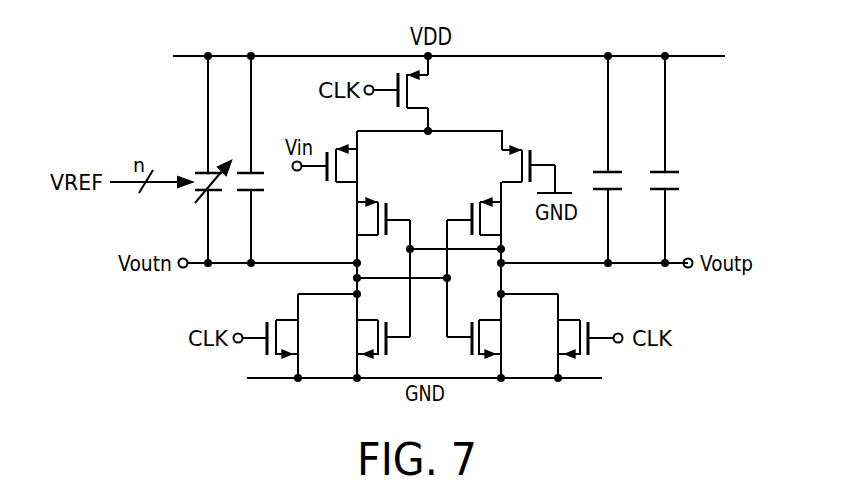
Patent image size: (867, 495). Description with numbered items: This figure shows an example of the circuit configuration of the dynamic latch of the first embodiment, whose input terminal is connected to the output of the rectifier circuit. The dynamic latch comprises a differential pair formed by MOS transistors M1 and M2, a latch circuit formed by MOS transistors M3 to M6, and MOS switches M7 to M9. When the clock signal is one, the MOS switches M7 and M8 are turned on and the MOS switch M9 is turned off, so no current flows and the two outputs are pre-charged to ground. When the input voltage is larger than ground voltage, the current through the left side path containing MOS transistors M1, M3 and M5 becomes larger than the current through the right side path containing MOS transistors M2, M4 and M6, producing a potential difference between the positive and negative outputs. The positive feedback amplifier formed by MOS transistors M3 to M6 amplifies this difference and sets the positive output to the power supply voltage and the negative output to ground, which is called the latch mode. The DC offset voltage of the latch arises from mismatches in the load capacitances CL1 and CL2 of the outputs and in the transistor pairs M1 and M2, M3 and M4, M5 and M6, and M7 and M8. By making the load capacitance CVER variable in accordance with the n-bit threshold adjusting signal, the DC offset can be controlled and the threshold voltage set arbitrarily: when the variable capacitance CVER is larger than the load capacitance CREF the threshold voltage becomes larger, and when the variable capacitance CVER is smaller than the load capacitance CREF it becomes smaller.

The MOS transistor M1 is at (356, 163).
The MOS transistor M2 is at (515, 164).
The MOS transistor M3 is at (375, 339).
The MOS transistor M4 is at (485, 339).
The MOS transistor M5 is at (369, 216).
The MOS transistor M6 is at (484, 216).
The MOS switch M7 is at (292, 339).
The MOS switch M8 is at (564, 339).
The MOS switch M9 is at (432, 89).
The load capacitance CL1 is at (266, 195).
The load capacitance CL2 is at (622, 195).
The load capacitance CREF is at (688, 195).
The variable capacitance CVER is at (179, 189).